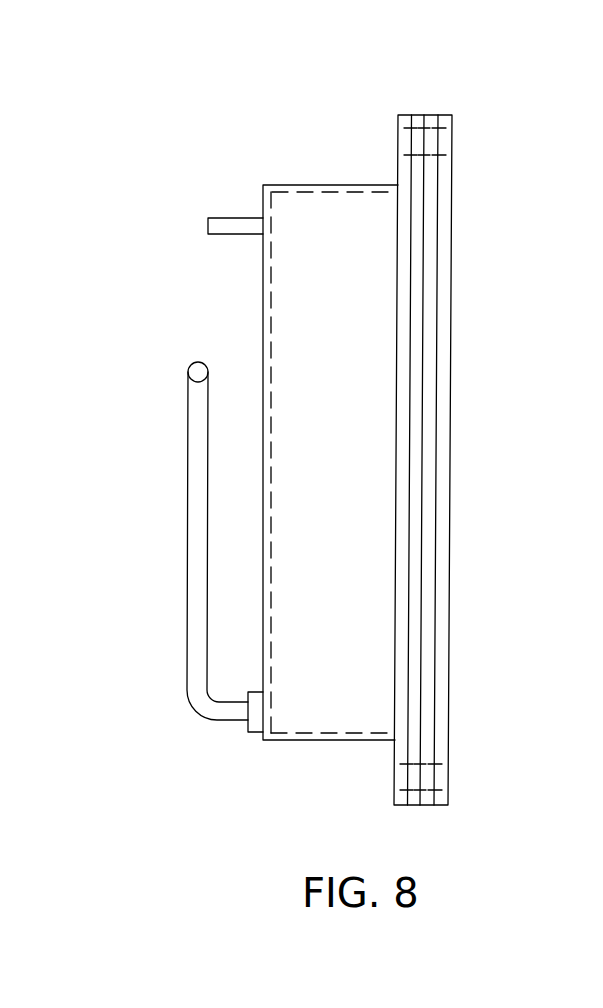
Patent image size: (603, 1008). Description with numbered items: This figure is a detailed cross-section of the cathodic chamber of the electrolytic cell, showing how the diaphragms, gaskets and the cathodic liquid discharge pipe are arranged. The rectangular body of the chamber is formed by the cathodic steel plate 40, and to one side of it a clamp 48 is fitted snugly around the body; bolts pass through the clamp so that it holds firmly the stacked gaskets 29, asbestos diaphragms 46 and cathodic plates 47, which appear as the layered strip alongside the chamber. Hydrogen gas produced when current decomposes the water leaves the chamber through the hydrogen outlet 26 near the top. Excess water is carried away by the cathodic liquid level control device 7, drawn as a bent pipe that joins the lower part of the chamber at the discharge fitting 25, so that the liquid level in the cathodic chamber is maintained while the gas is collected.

The cathodic liquid level control device 7 is at (170, 522).
The outlet fitting 25 is at (228, 770).
The hydrogen outlet 26 is at (221, 167).
The gaskets 29 is at (488, 460).
The cathodic steel plate 40 is at (230, 462).
The asbestos diaphragms 46 is at (499, 460).
The cathodic plates 47 is at (495, 460).
The clamp 48 is at (385, 418).